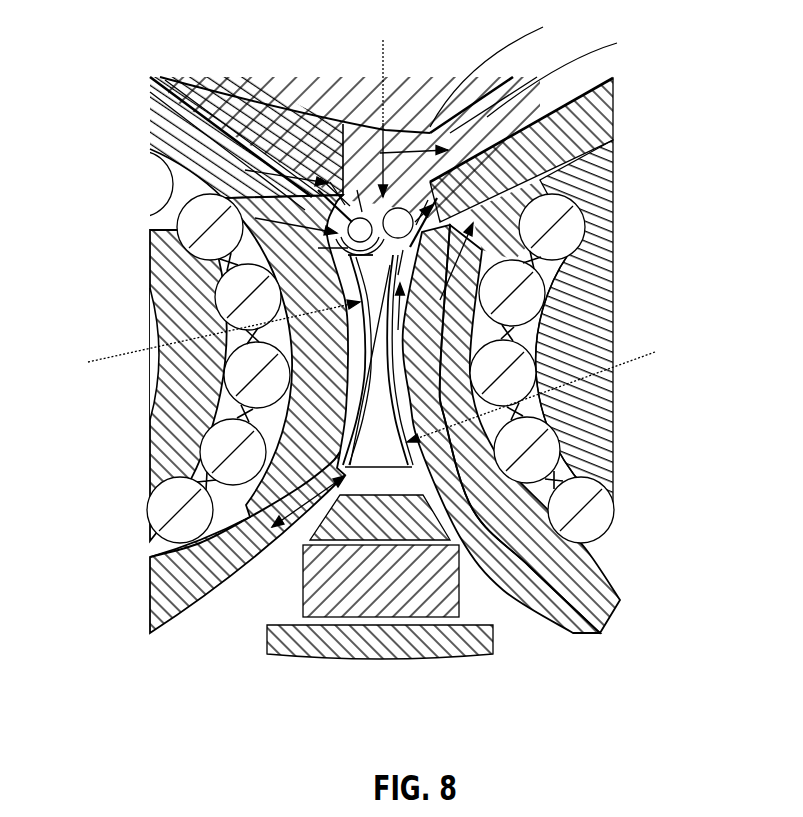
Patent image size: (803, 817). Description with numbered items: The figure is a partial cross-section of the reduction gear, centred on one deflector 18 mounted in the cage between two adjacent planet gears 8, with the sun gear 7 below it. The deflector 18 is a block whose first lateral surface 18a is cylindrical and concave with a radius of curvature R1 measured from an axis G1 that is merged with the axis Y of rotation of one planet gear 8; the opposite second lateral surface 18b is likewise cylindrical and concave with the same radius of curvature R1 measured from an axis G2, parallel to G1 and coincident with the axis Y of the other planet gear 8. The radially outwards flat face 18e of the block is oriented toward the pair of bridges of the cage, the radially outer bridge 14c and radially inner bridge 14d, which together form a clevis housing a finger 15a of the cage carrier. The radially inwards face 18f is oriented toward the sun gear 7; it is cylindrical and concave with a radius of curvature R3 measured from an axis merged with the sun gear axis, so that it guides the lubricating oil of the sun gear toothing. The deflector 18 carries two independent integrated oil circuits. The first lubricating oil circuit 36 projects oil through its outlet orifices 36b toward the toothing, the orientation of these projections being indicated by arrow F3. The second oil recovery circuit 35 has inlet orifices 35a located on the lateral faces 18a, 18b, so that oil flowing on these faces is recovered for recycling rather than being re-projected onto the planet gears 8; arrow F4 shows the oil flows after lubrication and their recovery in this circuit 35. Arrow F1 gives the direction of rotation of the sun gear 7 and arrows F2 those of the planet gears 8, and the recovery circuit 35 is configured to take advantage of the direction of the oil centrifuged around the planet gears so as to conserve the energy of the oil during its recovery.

The sun gear 7 is at (446, 72).
The planet gear 8 is at (222, 610).
The radially outer bridge 14c is at (460, 643).
The radially inner bridge 14d is at (452, 547).
The finger 15a is at (377, 597).
The deflector 18 is at (228, 567).
The first lateral surface 18a is at (230, 487).
The second lateral surface 18b is at (420, 457).
The radially outwards flat face 18e is at (478, 505).
The radially inwards face 18f is at (588, 142).
The second oil recovery circuit 35 is at (584, 184).
The oil inlet orifice 35a is at (232, 243).
The first lubricating oil circuit 36 is at (350, 183).
The oil outlet orifice 36b is at (330, 182).
The direction of rotation of the sun gear F1 is at (501, 68).
The direction of rotation of the planet gears F2 is at (322, 422).
The oil projection direction F3 is at (245, 170).
The oil flow after lubrication F4 is at (255, 218).
The radius of curvature R1 is at (105, 348).
The radius of curvature R3 is at (387, 107).
The axis G1 is at (204, 333).
The axis G2 is at (551, 390).
The axis of rotation Y is at (374, 381).